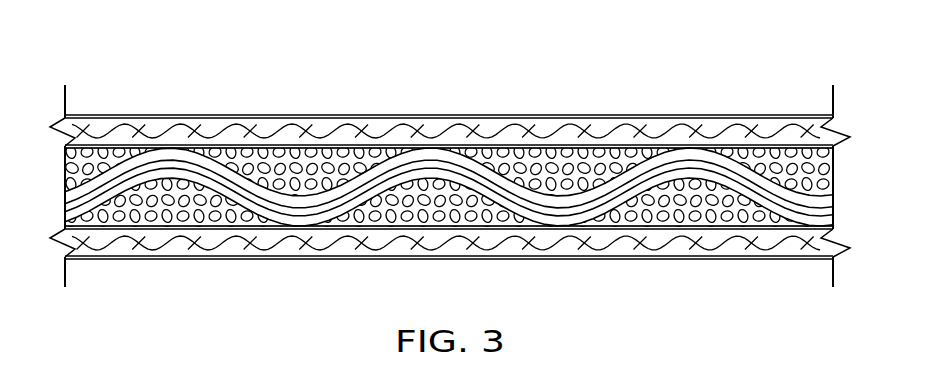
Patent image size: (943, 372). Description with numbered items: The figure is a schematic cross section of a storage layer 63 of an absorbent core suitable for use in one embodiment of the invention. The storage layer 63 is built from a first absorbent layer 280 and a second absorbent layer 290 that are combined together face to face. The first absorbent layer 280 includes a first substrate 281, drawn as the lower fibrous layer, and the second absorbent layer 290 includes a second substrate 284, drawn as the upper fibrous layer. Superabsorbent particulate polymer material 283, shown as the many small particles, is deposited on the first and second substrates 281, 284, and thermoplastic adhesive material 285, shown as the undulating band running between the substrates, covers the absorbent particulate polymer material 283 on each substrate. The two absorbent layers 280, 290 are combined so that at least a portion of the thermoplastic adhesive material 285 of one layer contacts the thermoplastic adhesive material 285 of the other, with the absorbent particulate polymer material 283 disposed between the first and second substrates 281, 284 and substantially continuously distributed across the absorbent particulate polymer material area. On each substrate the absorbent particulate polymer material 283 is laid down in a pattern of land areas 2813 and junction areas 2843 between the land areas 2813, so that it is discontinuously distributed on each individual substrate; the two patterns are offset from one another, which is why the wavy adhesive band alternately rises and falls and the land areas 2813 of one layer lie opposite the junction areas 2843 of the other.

The storage layer 63 is at (201, 87).
The second absorbent layer 290 is at (692, 106).
The second substrate 284 is at (770, 122).
The junction areas 2843 is at (555, 156).
The superabsorbent particulate polymer material 283 is at (295, 155).
The thermoplastic adhesive material 285 is at (123, 156).
The land areas 2813 is at (443, 214).
The first substrate 281 is at (789, 262).
The first absorbent layer 280 is at (655, 269).